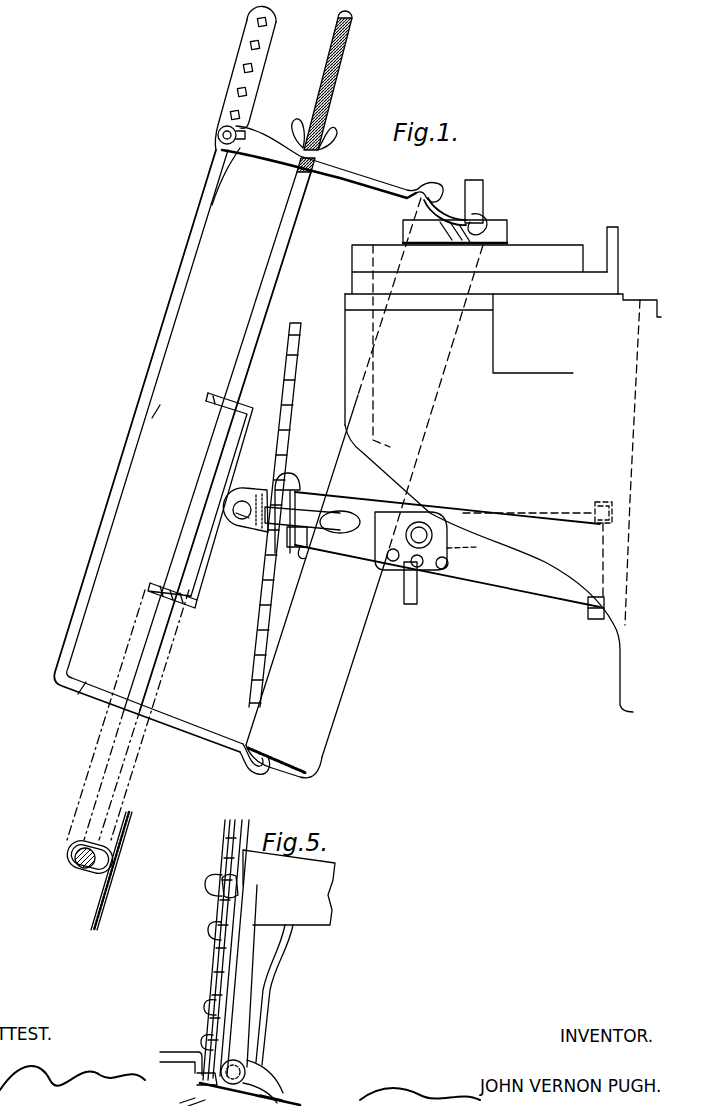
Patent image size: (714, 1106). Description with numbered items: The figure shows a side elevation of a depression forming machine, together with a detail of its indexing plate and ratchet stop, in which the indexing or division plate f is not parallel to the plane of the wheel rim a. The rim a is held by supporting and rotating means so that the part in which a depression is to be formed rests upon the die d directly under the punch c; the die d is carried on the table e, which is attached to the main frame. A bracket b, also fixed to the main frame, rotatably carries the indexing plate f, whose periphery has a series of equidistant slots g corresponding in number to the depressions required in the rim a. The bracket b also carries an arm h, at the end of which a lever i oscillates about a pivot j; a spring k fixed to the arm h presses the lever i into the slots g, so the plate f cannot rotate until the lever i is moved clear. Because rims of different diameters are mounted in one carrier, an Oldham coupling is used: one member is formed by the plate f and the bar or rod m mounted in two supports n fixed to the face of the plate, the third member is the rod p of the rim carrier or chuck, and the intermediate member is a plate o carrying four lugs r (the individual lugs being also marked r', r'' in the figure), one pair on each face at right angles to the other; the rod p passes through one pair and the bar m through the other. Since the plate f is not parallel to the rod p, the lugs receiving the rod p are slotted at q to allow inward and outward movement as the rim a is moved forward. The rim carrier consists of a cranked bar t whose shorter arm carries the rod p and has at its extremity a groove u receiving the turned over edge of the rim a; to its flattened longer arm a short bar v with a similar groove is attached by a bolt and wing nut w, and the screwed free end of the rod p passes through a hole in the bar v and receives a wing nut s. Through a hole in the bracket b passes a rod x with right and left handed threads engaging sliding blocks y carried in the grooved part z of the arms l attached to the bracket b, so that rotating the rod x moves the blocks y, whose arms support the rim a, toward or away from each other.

In FIG. 1, the wheel rim a is at (422, 202).
In FIG. 1, the bracket b is at (502, 578).
In FIG. 5, the bracket b is at (306, 882).
In FIG. 1, the punch c is at (483, 187).
In FIG. 1, the die d is at (507, 233).
In FIG. 1, the table e is at (553, 272).
In FIG. 5, the indexing or division plate f is at (212, 960).
In FIG. 1, the slots g is at (262, 598).
In FIG. 5, the slots g is at (213, 940).
In FIG. 5, the arm h is at (270, 943).
In FIG. 5, the lever i is at (266, 1082).
In FIG. 1, the pivot j is at (324, 540).
In FIG. 5, the pivot j is at (240, 1060).
In FIG. 5, the spring k is at (258, 1074).
In FIG. 1, the arms l is at (404, 591).
In FIG. 1, the bar or rod m is at (190, 598).
In FIG. 1, the supports n is at (252, 498).
In FIG. 5, the supports n is at (188, 1056).
In FIG. 1, the plate o is at (252, 430).
In FIG. 1, the rod of rim carrier p is at (148, 630).
In FIG. 1, the slot q is at (100, 858).
In FIG. 1, the lugs r is at (76, 868).
In FIG. 1, the pin r' is at (234, 531).
In FIG. 1, the pin r'' is at (201, 392).
In FIG. 1, the wing nut s is at (336, 140).
In FIG. 1, the cranked bar t is at (119, 540).
In FIG. 1, the groove u is at (262, 770).
In FIG. 1, the short bar v is at (381, 186).
In FIG. 1, the bolt and wing nut w is at (238, 133).
In FIG. 1, the rod x is at (433, 536).
In FIG. 1, the sliding blocks y is at (456, 516).
In FIG. 1, the grooved part z is at (469, 550).